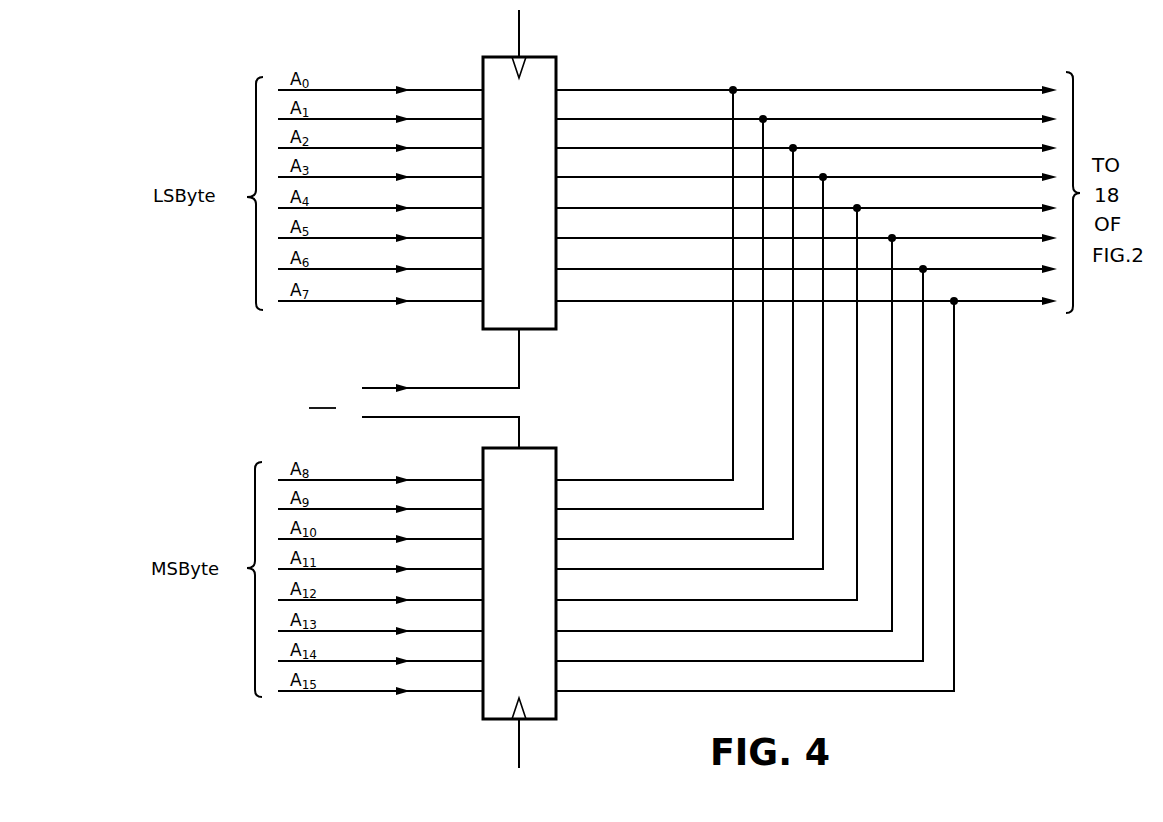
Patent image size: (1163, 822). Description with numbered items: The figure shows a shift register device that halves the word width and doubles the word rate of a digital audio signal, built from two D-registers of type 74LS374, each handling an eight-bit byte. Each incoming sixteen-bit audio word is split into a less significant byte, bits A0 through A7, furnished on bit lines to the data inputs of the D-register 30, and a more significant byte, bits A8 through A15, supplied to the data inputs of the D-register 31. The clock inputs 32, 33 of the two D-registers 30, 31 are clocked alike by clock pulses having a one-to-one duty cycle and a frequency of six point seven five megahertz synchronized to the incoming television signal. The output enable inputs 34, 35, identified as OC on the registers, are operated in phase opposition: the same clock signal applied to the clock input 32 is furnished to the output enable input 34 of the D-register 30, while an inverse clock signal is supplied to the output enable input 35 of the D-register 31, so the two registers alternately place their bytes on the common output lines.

The D-register 30 is at (556, 78).
The D-register 31 is at (556, 455).
The clock input 32 is at (519, 34).
The clock input 33 is at (519, 745).
The output enable input 34 is at (519, 366).
The output enable input 35 is at (519, 433).